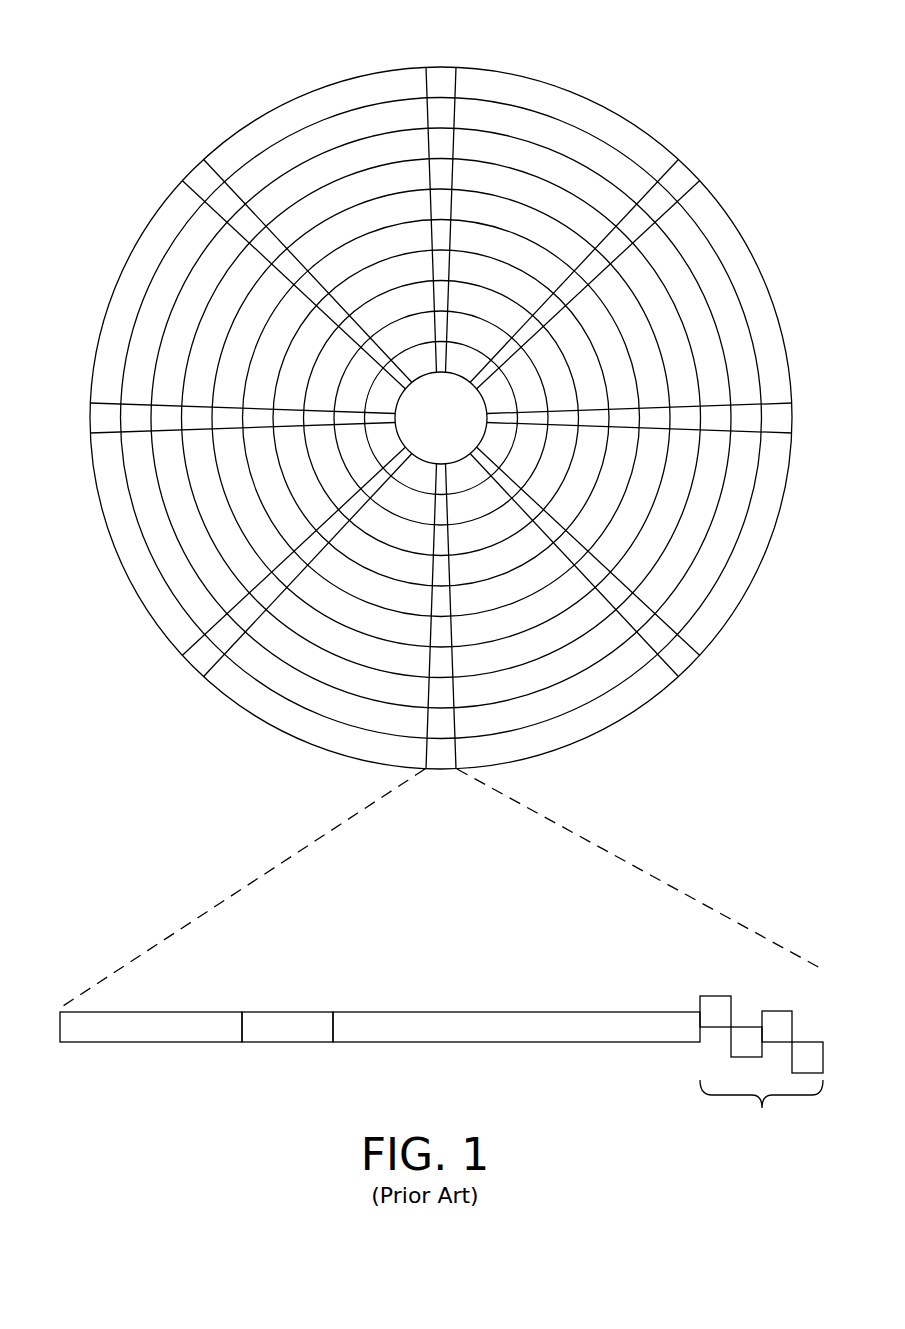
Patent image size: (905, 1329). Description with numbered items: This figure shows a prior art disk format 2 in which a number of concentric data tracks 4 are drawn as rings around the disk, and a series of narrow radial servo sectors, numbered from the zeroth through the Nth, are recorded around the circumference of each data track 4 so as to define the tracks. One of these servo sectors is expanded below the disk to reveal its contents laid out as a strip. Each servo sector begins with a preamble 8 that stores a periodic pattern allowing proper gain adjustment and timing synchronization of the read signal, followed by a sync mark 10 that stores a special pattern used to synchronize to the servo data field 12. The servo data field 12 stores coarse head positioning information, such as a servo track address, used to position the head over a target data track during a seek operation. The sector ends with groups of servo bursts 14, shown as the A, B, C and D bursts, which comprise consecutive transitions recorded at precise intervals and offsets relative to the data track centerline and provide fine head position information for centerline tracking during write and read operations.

The disk format 2 is at (176, 67).
The data tracks 4 is at (560, 135).
The preamble 8 is at (129, 1038).
The sync mark 10 is at (284, 1038).
The servo data field 12 is at (505, 1038).
The servo bursts 14 is at (683, 971).